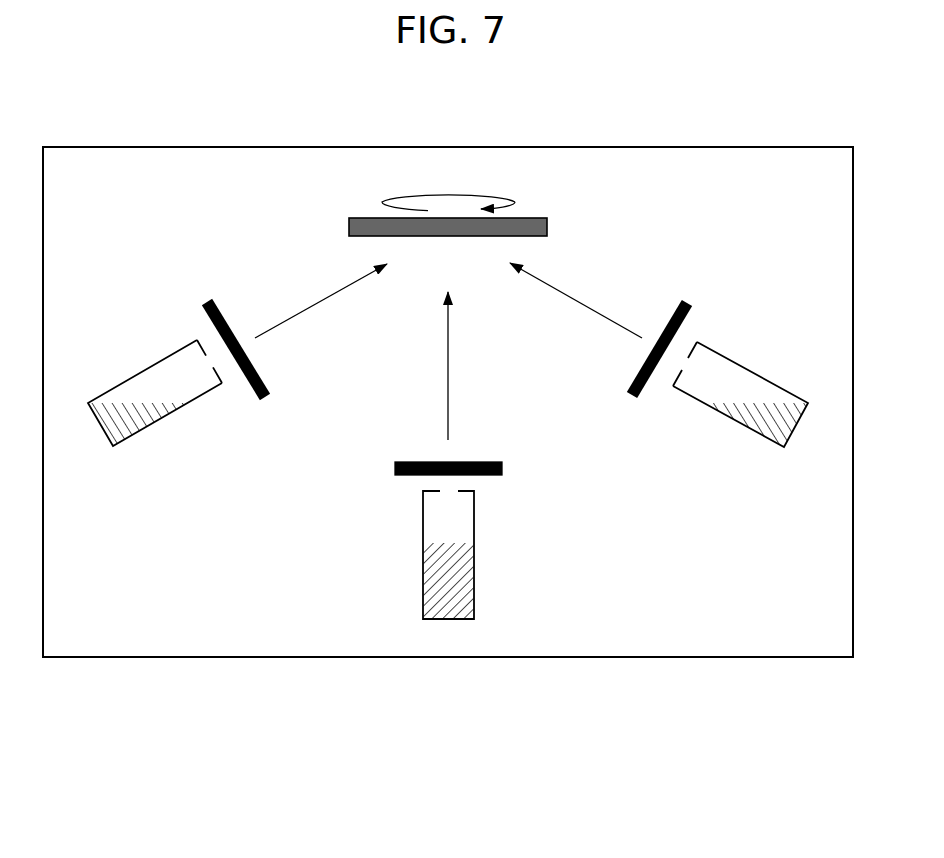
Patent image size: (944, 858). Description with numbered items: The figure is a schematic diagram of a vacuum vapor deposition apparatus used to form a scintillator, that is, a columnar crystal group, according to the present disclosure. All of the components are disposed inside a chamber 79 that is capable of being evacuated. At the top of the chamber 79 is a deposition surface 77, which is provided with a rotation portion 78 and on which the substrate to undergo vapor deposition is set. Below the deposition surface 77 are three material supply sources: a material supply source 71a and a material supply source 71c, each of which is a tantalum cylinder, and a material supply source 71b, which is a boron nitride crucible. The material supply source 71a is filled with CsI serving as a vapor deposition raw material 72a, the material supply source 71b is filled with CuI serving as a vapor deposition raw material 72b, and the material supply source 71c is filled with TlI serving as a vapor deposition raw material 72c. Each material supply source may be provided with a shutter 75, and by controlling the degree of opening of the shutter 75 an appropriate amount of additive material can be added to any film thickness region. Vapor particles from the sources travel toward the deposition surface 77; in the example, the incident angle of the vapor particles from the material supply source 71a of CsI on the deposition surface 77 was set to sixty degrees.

The material supply source 71a is at (158, 366).
The material supply source 71b is at (476, 577).
The material supply source 71c is at (757, 374).
The vapor deposition raw material 72a is at (155, 423).
The vapor deposition raw material 72b is at (440, 572).
The vapor deposition raw material 72c is at (748, 418).
The shutter 75 is at (209, 300).
The deposition surface 77 is at (548, 228).
The rotation portion 78 is at (503, 193).
The chamber 79 is at (733, 658).